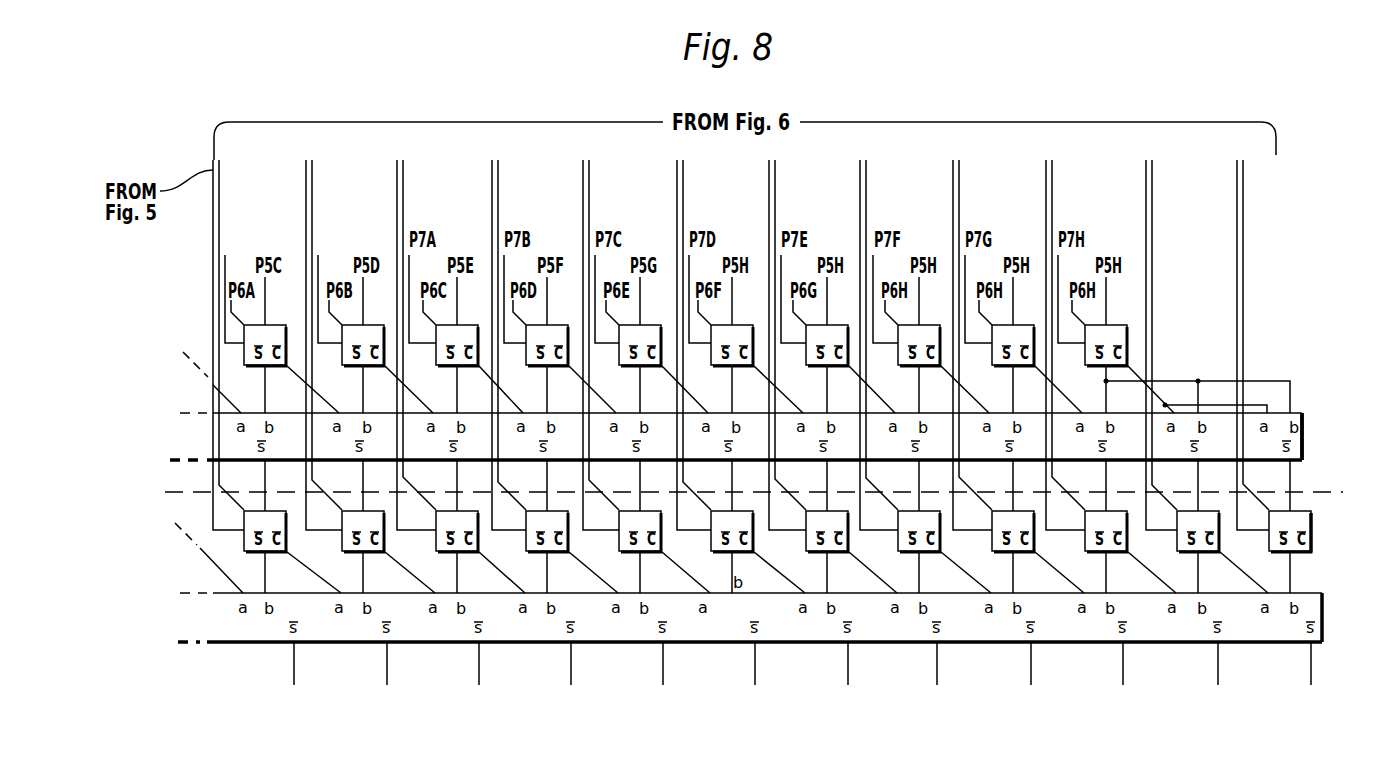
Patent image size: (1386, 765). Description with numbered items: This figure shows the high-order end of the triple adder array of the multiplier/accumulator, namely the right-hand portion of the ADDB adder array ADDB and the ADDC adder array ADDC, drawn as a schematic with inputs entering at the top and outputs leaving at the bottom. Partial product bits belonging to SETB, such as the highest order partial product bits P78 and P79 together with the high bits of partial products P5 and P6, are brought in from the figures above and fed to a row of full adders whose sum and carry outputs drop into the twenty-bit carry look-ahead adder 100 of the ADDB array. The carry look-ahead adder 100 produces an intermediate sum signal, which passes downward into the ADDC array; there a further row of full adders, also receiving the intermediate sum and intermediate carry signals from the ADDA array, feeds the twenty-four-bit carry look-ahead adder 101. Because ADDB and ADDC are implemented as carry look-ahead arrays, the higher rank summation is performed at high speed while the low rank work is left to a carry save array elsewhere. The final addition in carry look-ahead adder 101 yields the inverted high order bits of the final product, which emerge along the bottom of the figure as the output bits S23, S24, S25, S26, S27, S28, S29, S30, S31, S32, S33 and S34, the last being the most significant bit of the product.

The carry look-ahead adder 100 is at (758, 446).
The carry look-ahead adder 101 is at (795, 628).
The ADDB adder array ADDB is at (1372, 464).
The ADDC adder array ADDC is at (1385, 533).
The partial product bit P78 is at (238, 285).
The partial product bit P79 is at (331, 285).
The inverted product output bit S23 is at (309, 696).
The inverted product output bit S24 is at (402, 696).
The inverted product output bit S25 is at (494, 696).
The inverted product output bit S26 is at (586, 696).
The inverted product output bit S27 is at (678, 696).
The inverted product output bit S28 is at (770, 696).
The inverted product output bit S29 is at (863, 696).
The inverted product output bit S30 is at (952, 696).
The inverted product output bit S31 is at (1046, 696).
The inverted product output bit S32 is at (1138, 696).
The inverted product output bit S33 is at (1233, 696).
The inverted product output bit S34 is at (1326, 696).